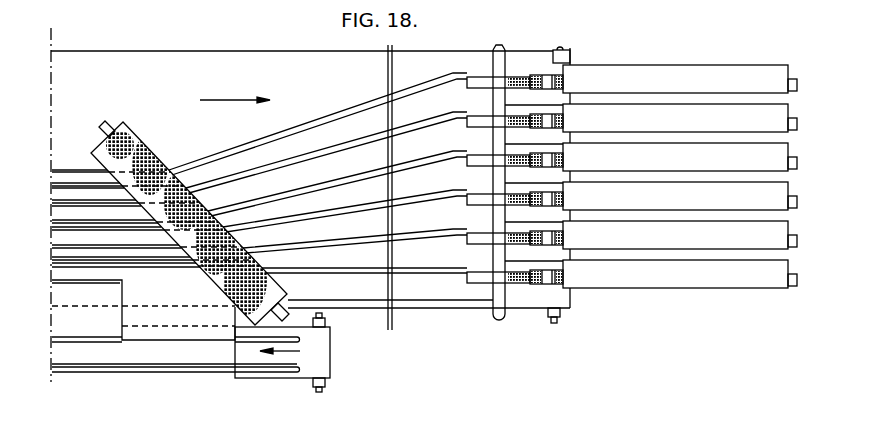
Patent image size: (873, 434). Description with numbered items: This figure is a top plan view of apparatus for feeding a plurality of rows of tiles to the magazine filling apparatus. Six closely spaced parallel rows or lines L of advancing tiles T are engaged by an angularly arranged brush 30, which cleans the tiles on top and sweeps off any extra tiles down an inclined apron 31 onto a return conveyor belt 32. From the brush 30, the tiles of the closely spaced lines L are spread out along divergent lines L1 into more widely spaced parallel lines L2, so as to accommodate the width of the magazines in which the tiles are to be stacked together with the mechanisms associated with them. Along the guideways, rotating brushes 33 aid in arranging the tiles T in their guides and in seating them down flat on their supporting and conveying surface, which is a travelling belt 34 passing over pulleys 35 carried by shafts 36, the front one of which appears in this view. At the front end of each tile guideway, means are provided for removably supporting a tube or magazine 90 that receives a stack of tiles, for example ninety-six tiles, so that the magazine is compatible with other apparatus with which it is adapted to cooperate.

The brush 30 is at (157, 158).
The inclined apron 31 is at (135, 301).
The return conveyor belt 32 is at (215, 355).
The rotating brushes 33 is at (485, 118).
The travelling belt 34 is at (229, 50).
The pulleys 35 is at (606, 36).
The shafts 36 is at (553, 323).
The tube or magazine 90 is at (794, 84).
The rows or lines of tiles L is at (70, 198).
The divergent lines L1 is at (363, 152).
The more widely spaced parallel lines L2 is at (534, 77).
The tiles T is at (554, 77).